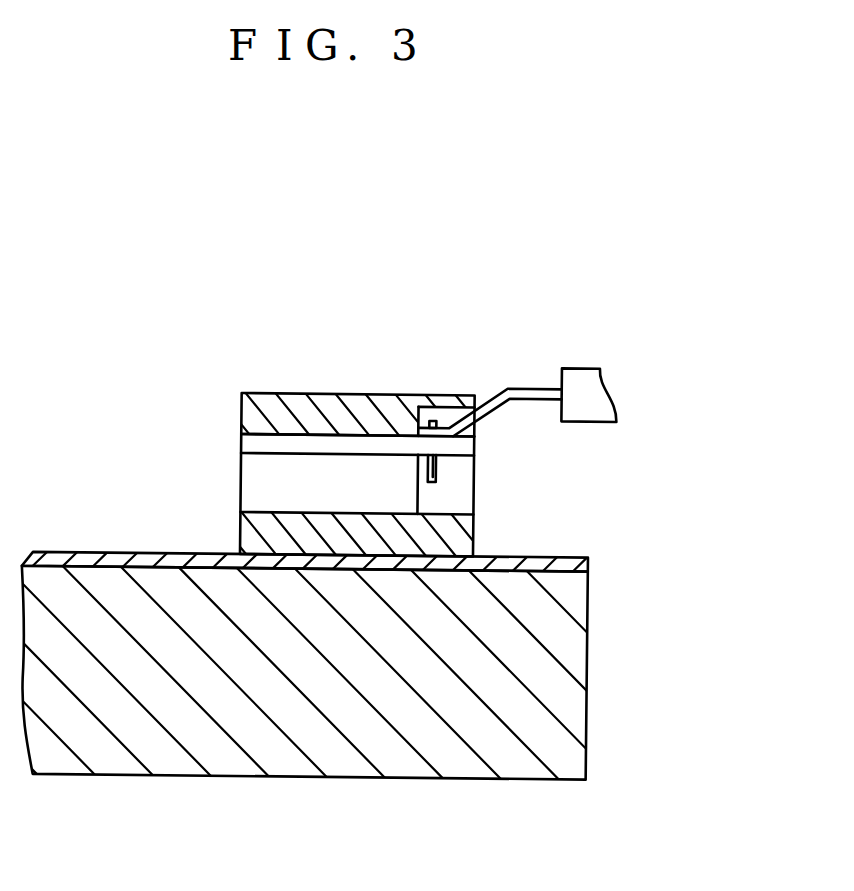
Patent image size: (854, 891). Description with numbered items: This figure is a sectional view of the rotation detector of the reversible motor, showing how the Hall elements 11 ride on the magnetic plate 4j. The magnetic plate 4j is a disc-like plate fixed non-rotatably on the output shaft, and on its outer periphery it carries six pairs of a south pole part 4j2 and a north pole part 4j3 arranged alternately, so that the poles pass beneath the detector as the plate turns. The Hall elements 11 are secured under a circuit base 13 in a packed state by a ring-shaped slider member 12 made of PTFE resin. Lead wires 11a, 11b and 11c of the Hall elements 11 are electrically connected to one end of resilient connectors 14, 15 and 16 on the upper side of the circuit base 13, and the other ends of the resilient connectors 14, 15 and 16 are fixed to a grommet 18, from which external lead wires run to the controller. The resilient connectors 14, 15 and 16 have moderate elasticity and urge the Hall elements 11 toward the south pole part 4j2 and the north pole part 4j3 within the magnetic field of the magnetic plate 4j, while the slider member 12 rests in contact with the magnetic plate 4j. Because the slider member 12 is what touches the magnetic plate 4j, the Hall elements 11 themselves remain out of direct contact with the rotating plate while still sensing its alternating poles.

The Hall element 11 is at (242, 483).
The lead wire 11a is at (580, 478).
The lead wire 11b is at (580, 478).
The lead wire 11c is at (435, 470).
The slider member 12 is at (240, 412).
The circuit base 13 is at (240, 442).
The resilient connector 14 is at (532, 355).
The resilient connector 15 is at (532, 355).
The resilient connector 16 is at (488, 386).
The grommet 18 is at (584, 365).
The magnetic plate 4j is at (588, 669).
The south pole part 4j2 is at (399, 542).
The north pole part 4j3 is at (537, 552).